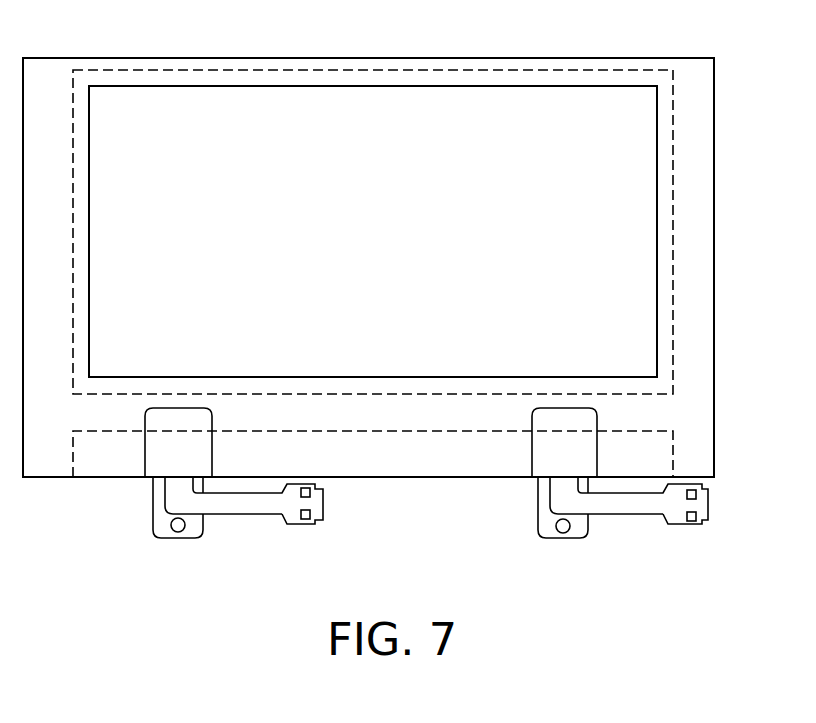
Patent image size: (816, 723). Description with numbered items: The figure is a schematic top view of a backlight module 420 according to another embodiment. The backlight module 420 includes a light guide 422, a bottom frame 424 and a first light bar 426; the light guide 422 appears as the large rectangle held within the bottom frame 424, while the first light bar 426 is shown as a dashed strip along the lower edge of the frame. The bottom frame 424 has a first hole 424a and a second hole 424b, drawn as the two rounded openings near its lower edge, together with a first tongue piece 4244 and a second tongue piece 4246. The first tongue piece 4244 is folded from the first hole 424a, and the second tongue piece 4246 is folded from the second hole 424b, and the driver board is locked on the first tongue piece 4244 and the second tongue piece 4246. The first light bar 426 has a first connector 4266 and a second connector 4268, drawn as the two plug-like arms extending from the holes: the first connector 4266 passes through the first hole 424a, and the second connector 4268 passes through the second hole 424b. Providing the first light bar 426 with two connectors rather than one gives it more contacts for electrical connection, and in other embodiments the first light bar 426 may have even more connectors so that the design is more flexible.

The backlight module 420 is at (776, 628).
The light guide 422 is at (630, 68).
The bottom frame 424 is at (695, 70).
The first light bar 426 is at (673, 433).
The first hole 424a is at (553, 410).
The second hole 424b is at (168, 410).
The first tongue piece 4244 is at (563, 535).
The second tongue piece 4246 is at (178, 534).
The first connector 4266 is at (676, 517).
The second connector 4268 is at (290, 517).